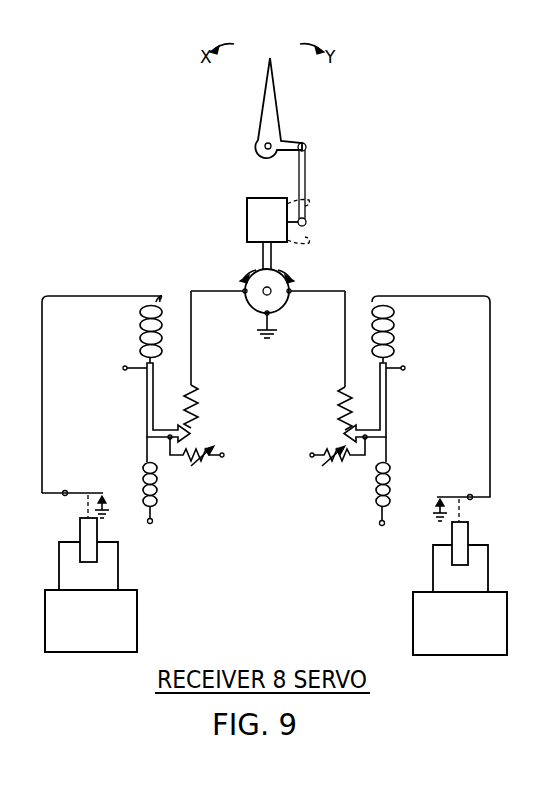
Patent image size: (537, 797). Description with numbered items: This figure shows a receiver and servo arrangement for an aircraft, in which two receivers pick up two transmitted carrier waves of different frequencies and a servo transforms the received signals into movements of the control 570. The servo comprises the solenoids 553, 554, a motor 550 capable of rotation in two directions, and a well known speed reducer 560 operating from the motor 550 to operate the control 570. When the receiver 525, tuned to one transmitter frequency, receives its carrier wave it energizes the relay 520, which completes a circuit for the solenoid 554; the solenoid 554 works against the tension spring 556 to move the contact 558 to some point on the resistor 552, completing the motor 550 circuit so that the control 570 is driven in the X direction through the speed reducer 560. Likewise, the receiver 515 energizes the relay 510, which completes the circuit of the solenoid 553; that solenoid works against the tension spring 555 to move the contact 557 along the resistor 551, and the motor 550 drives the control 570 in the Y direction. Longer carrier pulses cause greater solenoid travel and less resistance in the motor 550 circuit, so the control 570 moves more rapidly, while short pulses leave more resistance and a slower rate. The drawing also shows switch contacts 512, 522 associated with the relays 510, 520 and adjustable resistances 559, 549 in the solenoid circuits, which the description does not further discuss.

The control 570 is at (274, 111).
The speed reducer 560 is at (268, 206).
The motor 550 is at (283, 307).
The solenoid 553 is at (141, 321).
The solenoid 554 is at (395, 332).
The contact 557 is at (164, 430).
The contact 558 is at (372, 406).
The resistor 551 is at (197, 418).
The resistor 552 is at (338, 419).
The variable resistor 559 is at (202, 464).
The variable resistor 549 is at (346, 463).
The tension spring 555 is at (143, 480).
The tension spring 556 is at (391, 483).
The switch 512 is at (89, 489).
The switch 522 is at (437, 492).
The relay 510 is at (80, 529).
The relay 520 is at (468, 534).
The receiver 515 is at (106, 631).
The receiver 525 is at (478, 633).